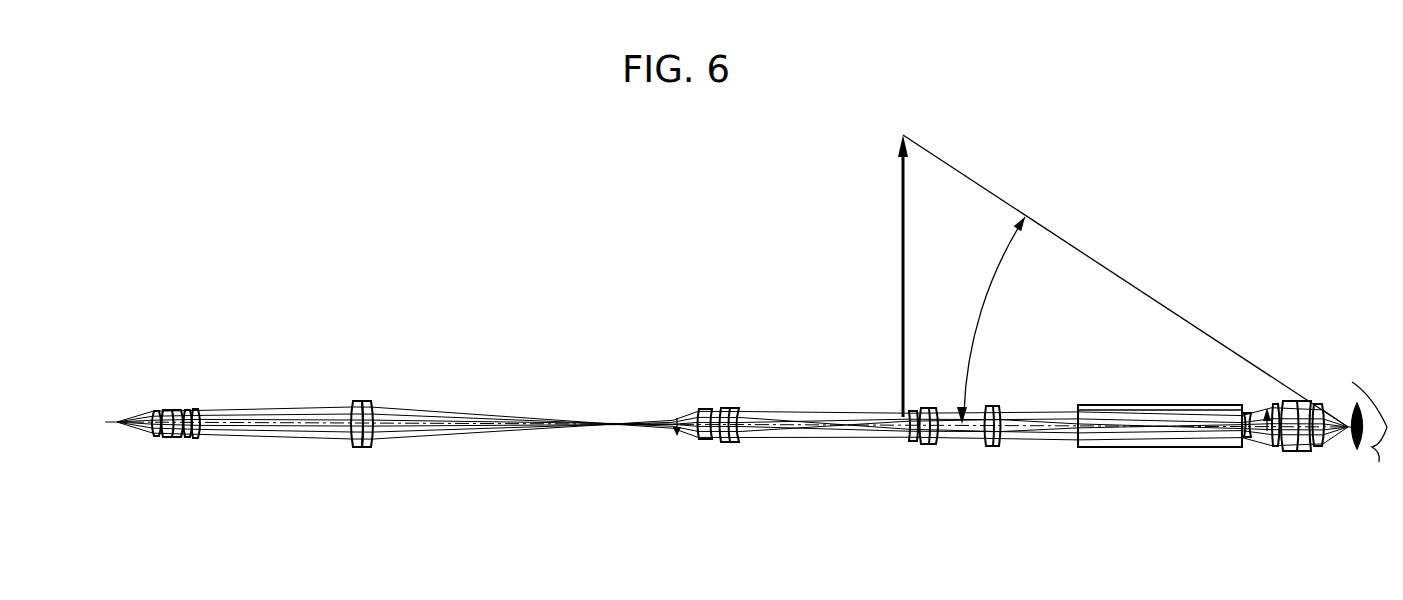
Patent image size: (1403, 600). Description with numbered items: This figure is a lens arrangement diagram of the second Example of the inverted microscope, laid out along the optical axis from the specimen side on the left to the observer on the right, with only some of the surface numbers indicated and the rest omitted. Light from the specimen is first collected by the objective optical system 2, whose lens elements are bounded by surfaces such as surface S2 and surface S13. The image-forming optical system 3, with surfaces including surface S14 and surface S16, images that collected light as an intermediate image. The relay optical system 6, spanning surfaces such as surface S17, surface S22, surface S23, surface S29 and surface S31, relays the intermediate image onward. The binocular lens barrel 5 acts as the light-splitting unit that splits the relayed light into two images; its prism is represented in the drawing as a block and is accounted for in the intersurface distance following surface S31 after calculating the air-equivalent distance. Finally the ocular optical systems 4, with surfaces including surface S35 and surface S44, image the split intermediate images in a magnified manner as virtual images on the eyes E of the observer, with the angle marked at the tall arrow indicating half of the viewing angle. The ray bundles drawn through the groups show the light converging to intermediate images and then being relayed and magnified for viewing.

The objective optical system 2 is at (197, 435).
The image-forming optical system 3 is at (366, 431).
The ocular optical systems 4 is at (1312, 427).
The binocular lens barrel 5 is at (1248, 455).
The relay optical system 6 is at (822, 421).
The surface number 2 S2 is at (155, 410).
The surface number 13 S13 is at (201, 410).
The surface number 14 S14 is at (353, 404).
The surface number 16 S16 is at (373, 403).
The surface number 17 S17 is at (699, 410).
The surface number 22 S22 is at (740, 408).
The surface number 23 S23 is at (907, 412).
The surface number 29 S29 is at (946, 407).
The surface number 31 S31 is at (1007, 389).
The surface number 35 S35 is at (1267, 440).
The surface number 44 S44 is at (1325, 406).
The eyes E is at (1379, 462).